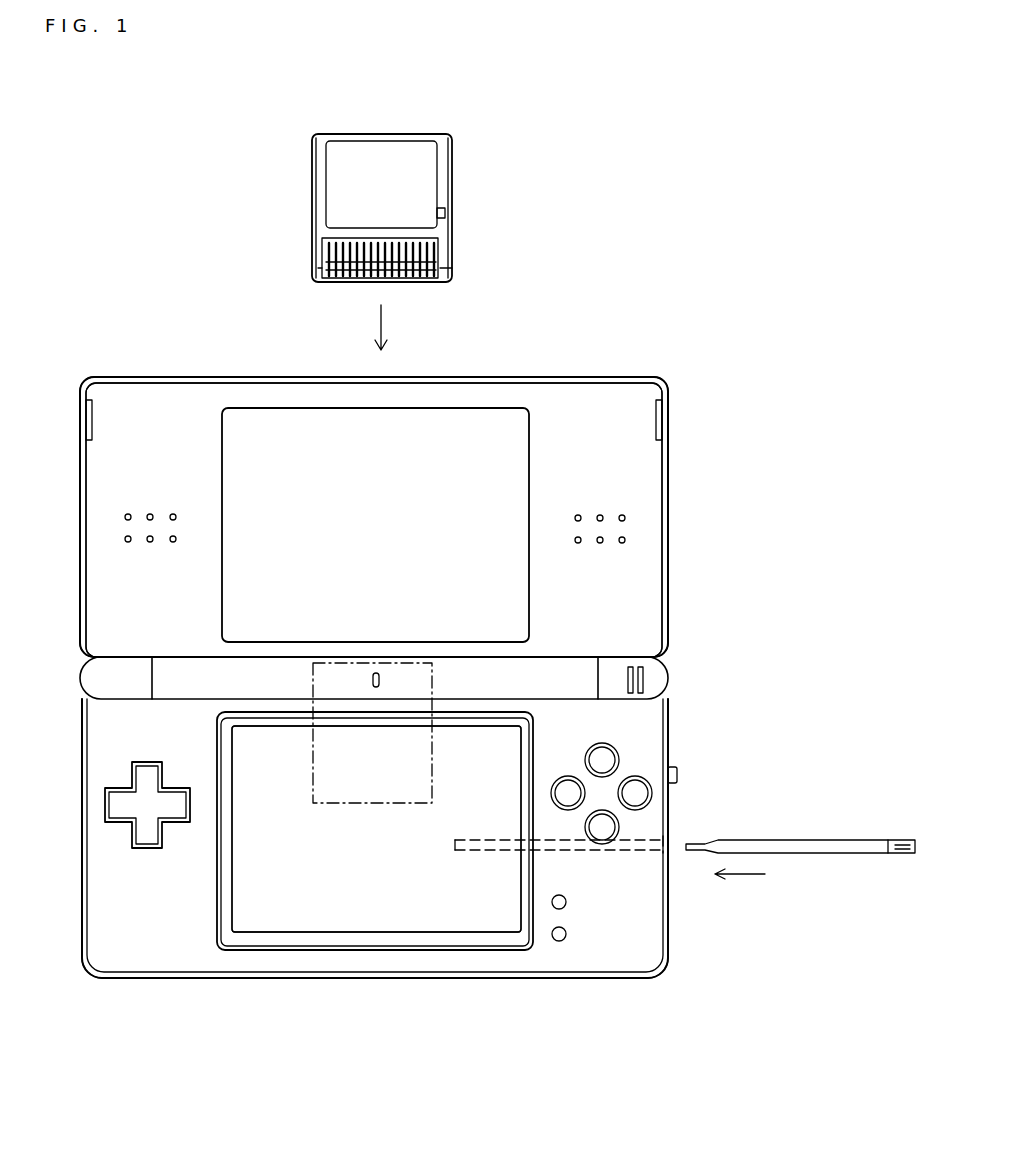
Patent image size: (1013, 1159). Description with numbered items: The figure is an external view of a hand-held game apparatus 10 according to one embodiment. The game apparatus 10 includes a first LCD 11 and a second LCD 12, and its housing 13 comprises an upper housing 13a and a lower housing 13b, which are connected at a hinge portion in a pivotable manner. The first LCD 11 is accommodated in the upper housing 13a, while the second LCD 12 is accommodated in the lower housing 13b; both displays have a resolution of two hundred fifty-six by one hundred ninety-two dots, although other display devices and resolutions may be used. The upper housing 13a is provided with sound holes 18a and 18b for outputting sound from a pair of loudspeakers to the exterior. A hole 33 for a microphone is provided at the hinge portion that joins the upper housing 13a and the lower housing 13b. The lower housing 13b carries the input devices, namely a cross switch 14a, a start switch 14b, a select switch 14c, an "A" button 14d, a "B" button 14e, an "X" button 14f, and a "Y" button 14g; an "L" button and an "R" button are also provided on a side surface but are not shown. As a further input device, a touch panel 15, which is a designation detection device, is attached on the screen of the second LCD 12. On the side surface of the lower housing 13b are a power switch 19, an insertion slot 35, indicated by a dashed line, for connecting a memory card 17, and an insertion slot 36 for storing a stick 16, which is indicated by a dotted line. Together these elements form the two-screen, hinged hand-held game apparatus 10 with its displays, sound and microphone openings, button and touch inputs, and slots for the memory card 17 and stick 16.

The game apparatus 10 is at (87, 270).
The first LCD 11 is at (262, 440).
The second LCD 12 is at (376, 829).
The housing 13 is at (623, 370).
The upper housing 13a is at (557, 460).
The lower housing 13b is at (90, 922).
The cross switch 14a is at (113, 808).
The start switch 14b is at (566, 904).
The select switch 14c is at (560, 940).
The "A" button 14d is at (635, 787).
The "B" button 14e is at (618, 830).
The "X" button 14f is at (602, 760).
The "Y" button 14g is at (568, 800).
The touch panel 15 is at (240, 897).
The stick 16 is at (813, 843).
The memory card 17 is at (418, 135).
The sound hole 18a is at (128, 517).
The sound hole 18b is at (622, 517).
The power switch 19 is at (679, 775).
The hole for a microphone 33 is at (376, 680).
The insertion slot 35 is at (432, 683).
The insertion slot 36 is at (556, 852).